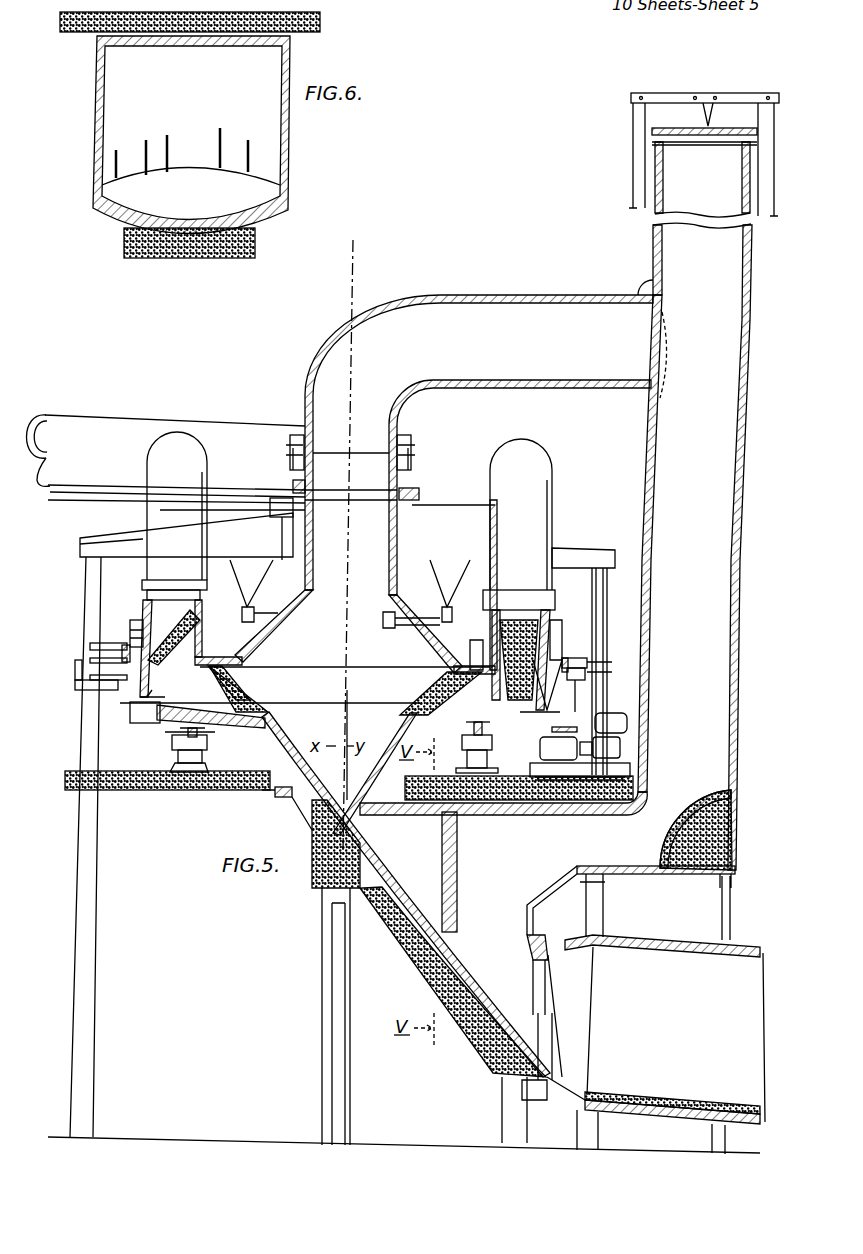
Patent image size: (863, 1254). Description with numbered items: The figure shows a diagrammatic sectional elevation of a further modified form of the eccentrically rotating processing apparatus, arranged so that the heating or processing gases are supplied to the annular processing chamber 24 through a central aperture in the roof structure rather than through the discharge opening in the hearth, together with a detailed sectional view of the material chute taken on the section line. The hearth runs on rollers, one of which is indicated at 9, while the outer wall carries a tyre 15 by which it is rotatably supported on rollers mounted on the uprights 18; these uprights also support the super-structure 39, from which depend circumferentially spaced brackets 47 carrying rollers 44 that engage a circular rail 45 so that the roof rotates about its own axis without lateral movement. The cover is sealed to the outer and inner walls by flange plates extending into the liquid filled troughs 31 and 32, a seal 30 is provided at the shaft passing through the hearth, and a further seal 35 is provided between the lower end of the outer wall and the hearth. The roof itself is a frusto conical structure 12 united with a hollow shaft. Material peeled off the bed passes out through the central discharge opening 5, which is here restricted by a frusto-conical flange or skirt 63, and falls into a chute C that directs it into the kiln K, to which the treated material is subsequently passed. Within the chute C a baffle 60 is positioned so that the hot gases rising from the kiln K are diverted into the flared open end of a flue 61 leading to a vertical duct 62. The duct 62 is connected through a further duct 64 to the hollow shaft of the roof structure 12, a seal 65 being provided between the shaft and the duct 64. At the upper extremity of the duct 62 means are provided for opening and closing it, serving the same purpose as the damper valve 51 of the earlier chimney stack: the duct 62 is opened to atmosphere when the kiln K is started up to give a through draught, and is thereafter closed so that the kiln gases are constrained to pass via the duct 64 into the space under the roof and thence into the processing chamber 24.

In FIG. 5, the central discharge opening 5 is at (376, 692).
In FIG. 5, the roller 9 is at (198, 734).
In FIG. 5, the frusto conical roof structure 12 is at (400, 616).
In FIG. 5, the tyre 15 is at (565, 662).
In FIG. 5, the uprights 18 is at (90, 580).
In FIG. 5, the annular processing chamber 24 is at (522, 602).
In FIG. 5, the seal 30 is at (280, 797).
In FIG. 5, the liquid filled trough 31 is at (208, 630).
In FIG. 5, the liquid filled trough 32 is at (142, 630).
In FIG. 5, the seal 35 is at (152, 702).
In FIG. 5, the super-structure 39 is at (585, 550).
In FIG. 5, the rollers 44 is at (448, 630).
In FIG. 5, the circular rail 45 is at (437, 628).
In FIG. 5, the brackets 47 is at (410, 492).
In FIG. 5, the damper valve 51 is at (733, 141).
In FIG. 6, the baffle 60 is at (213, 86).
In FIG. 5, the baffle 60 is at (457, 835).
In FIG. 5, the flue 61 is at (602, 835).
In FIG. 5, the vertical duct 62 is at (712, 430).
In FIG. 5, the frusto-conical flange or skirt 63 is at (280, 752).
In FIG. 5, the duct 64 is at (548, 368).
In FIG. 5, the seal 65 is at (405, 462).
In FIG. 6, the chute C is at (97, 99).
In FIG. 5, the chute C is at (423, 922).
In FIG. 5, the kiln K is at (690, 986).